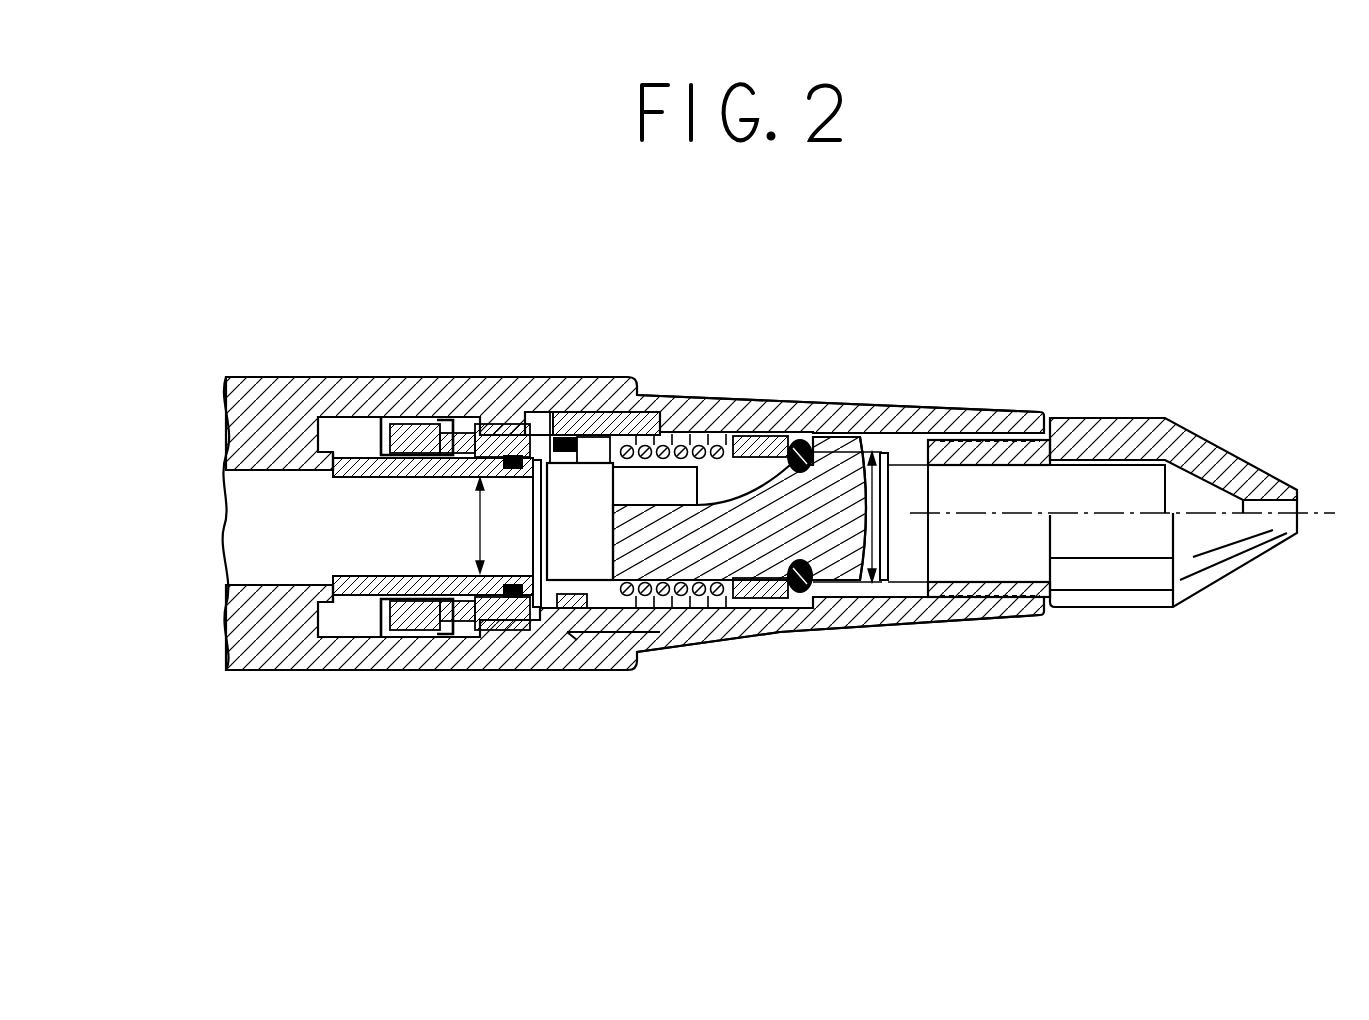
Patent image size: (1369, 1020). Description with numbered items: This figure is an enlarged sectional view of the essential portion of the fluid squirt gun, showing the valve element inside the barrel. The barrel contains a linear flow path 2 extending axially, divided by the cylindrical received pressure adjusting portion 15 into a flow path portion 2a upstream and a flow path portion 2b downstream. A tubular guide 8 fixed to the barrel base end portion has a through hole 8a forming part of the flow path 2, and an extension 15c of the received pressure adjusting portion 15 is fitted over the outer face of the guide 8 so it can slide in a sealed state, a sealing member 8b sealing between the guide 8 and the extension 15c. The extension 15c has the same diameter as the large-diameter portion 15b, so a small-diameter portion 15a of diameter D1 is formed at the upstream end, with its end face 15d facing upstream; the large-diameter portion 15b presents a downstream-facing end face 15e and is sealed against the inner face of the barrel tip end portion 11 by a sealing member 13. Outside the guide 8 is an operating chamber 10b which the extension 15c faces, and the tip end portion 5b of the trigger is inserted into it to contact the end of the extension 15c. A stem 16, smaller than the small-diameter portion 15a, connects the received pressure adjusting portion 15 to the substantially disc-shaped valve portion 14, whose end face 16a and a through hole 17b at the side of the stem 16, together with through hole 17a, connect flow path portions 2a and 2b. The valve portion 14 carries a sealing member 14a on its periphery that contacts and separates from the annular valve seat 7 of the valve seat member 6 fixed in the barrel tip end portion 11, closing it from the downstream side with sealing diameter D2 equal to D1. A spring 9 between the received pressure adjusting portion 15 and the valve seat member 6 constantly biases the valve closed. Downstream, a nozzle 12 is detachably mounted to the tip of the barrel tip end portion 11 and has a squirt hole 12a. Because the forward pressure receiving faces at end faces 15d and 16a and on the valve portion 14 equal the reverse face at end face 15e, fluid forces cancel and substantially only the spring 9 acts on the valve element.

The flow path 2 is at (260, 480).
The flow path portion 2a is at (318, 540).
The flow path portion 2b is at (728, 402).
The tip end portion 5b is at (418, 612).
The valve seat member 6 is at (795, 600).
The valve seat 7 is at (806, 438).
The tubular guide 8 is at (403, 455).
The through hole 8a is at (368, 550).
The sealing member 8b is at (500, 622).
The spring 9 is at (656, 603).
The operating chamber 10b is at (345, 435).
The barrel tip end portion 11 is at (960, 425).
The nozzle 12 is at (1183, 447).
The squirt hole 12a is at (1303, 500).
The sealing member 13 is at (545, 608).
The valve portion 14 is at (836, 500).
The sealing member 14a is at (822, 592).
The received pressure adjusting portion 15 is at (605, 400).
The small-diameter portion 15a is at (543, 428).
The large-diameter portion 15b is at (628, 412).
The extension 15c is at (478, 452).
The end face 15d is at (512, 454).
The end face 15e is at (634, 640).
The stem 16 is at (695, 560).
The end face 16a is at (600, 560).
The through hole 17a is at (530, 609).
The through hole 17b is at (672, 432).
The diameter D1 is at (495, 525).
The sealing diameter D2 is at (880, 560).